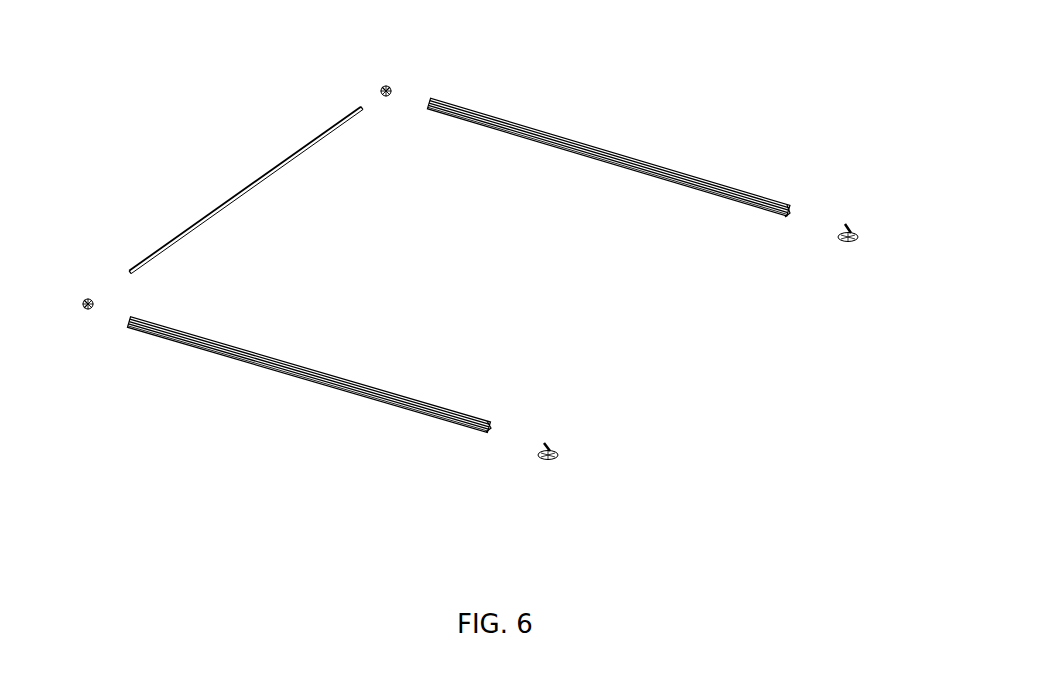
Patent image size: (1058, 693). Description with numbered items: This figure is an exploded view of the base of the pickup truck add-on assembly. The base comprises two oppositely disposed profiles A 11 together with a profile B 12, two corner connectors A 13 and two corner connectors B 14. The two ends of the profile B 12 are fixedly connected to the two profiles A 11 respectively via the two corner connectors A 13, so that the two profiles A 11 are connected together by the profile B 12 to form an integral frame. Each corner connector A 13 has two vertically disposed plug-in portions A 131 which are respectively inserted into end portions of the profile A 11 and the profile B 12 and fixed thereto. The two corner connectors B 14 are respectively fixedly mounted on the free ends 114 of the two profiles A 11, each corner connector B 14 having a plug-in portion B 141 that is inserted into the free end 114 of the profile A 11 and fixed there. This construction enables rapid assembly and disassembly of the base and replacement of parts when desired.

The profile A 11 is at (598, 151).
The free end 114 is at (775, 208).
The profile B 12 is at (233, 191).
The corner connector A 13 is at (387, 82).
The plug-in portion A 131 is at (376, 83).
The corner connector B 14 is at (855, 221).
The plug-in portion B 141 is at (849, 219).